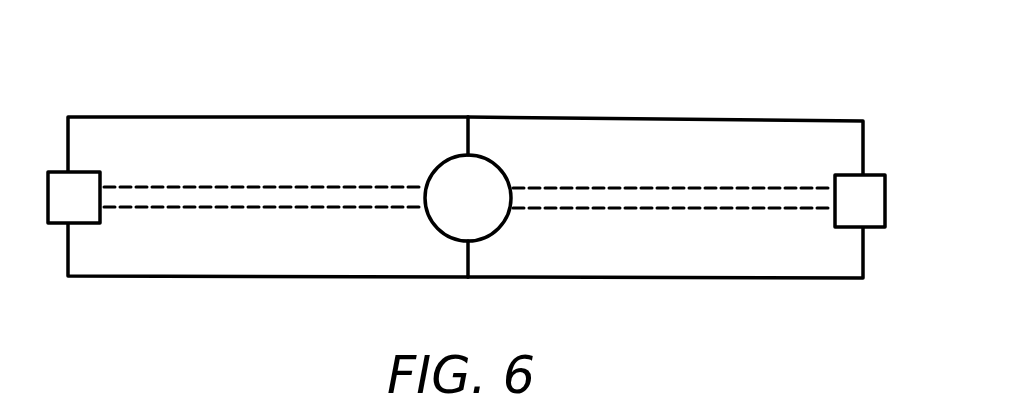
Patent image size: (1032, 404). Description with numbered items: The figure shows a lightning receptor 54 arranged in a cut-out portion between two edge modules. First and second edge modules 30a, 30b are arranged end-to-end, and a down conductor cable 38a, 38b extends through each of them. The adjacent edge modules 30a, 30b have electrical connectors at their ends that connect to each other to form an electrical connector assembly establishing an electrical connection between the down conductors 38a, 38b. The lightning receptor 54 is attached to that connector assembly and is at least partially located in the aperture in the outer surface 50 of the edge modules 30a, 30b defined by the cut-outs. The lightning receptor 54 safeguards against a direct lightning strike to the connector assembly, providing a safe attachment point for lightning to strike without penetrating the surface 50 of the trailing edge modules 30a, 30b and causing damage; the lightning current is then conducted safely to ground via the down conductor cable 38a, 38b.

The first edge module 30a is at (258, 88).
The second edge module 30b is at (730, 88).
The down conductor cable 38a is at (268, 190).
The down conductor cable 38b is at (635, 198).
The outer surface 50 is at (265, 250).
The lightning receptor 54 is at (482, 182).